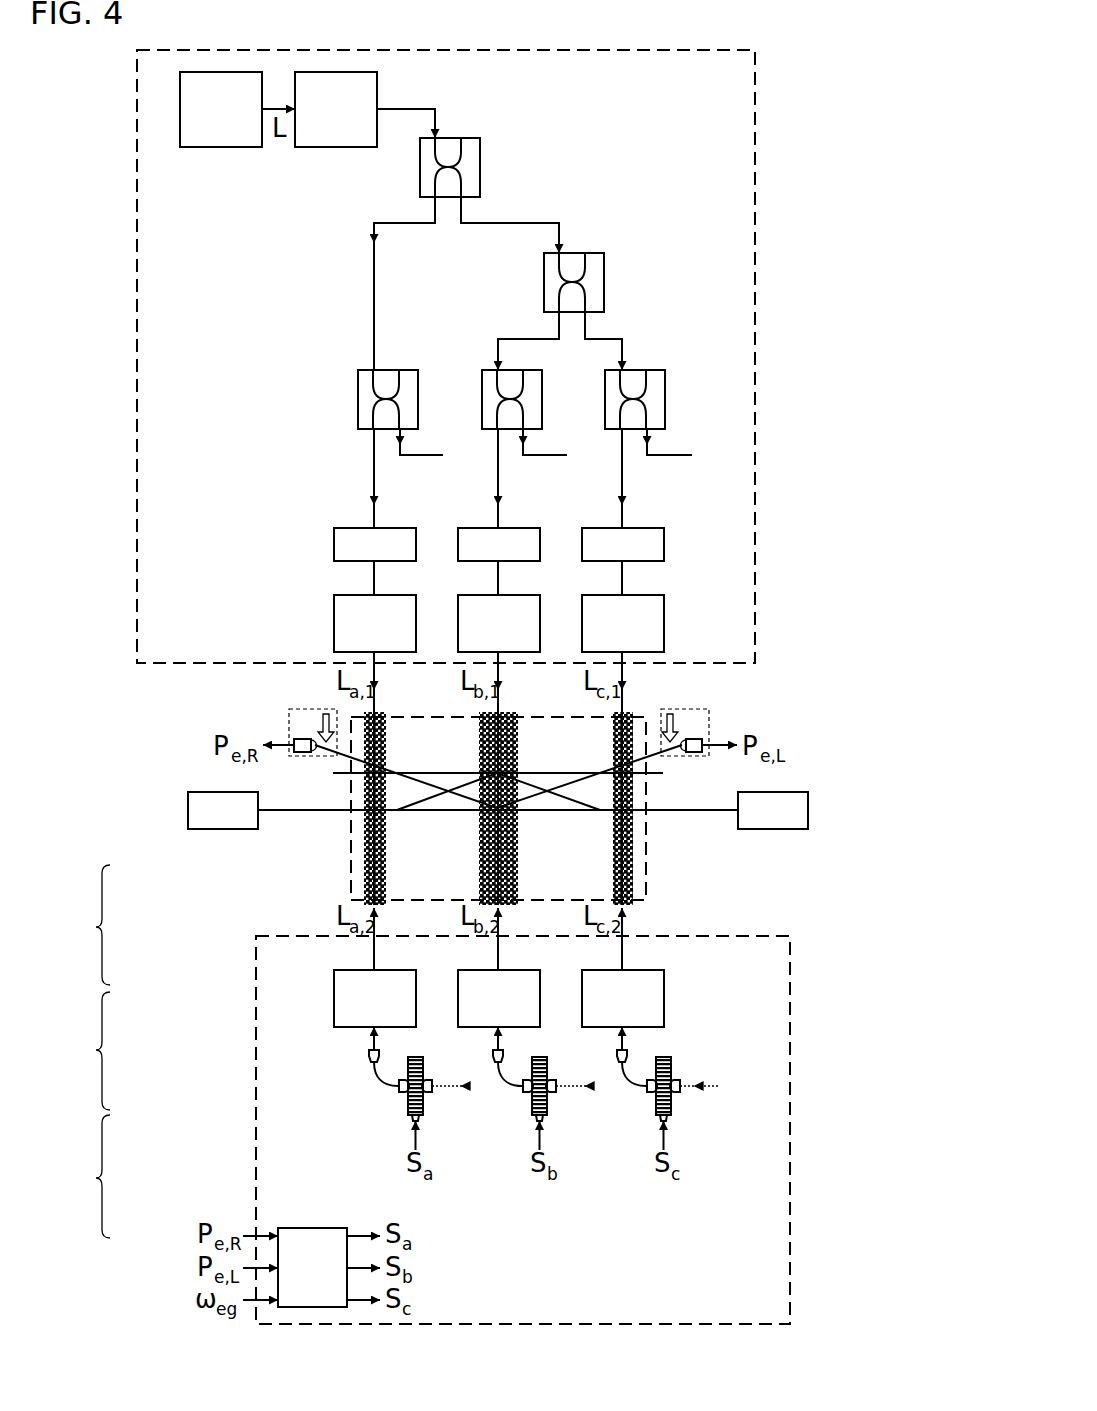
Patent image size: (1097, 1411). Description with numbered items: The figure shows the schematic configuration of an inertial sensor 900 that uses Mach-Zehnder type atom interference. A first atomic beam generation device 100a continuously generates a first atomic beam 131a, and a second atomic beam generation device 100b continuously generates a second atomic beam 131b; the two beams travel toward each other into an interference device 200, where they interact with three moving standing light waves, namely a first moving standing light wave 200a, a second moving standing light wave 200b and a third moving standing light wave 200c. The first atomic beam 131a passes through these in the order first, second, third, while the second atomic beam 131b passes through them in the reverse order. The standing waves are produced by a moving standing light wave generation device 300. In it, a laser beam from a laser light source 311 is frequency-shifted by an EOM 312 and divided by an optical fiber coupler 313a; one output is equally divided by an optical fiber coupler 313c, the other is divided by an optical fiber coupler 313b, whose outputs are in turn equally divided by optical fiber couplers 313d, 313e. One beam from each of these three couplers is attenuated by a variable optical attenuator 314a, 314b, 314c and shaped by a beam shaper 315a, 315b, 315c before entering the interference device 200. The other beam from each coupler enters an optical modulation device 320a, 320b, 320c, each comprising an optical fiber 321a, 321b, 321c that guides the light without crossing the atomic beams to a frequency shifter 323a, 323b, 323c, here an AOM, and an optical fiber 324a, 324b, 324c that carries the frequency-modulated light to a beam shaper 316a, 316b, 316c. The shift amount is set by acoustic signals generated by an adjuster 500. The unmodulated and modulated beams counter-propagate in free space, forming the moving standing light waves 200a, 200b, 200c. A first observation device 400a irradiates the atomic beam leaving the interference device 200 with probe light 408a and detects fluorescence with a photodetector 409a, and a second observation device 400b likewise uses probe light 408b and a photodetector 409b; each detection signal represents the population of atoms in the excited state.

The inertial sensor 900 is at (821, 50).
The moving standing light wave generation device 300 is at (757, 322).
The laser light source 311 is at (218, 148).
The EOM 312 is at (332, 148).
The optical fiber coupler 313a is at (478, 138).
The optical fiber coupler 313b is at (602, 253).
The optical fiber coupler 313c is at (358, 370).
The optical fiber coupler 313d is at (482, 370).
The optical fiber coupler 313e is at (664, 370).
The variable optical attenuator 314a is at (335, 528).
The variable optical attenuator 314b is at (458, 562).
The variable optical attenuator 314c is at (664, 544).
The beam shaper 315a is at (335, 595).
The beam shaper 315b is at (540, 596).
The beam shaper 315c is at (664, 622).
The beam shaper 316a is at (334, 1000).
The beam shaper 316b is at (539, 972).
The beam shaper 316c is at (664, 1000).
The optical modulation device 320a is at (74, 925).
The optical modulation device 320b is at (74, 1051).
The optical modulation device 320c is at (74, 1176).
The optical fiber 321a is at (420, 457).
The optical fiber 321b is at (545, 457).
The optical fiber 321c is at (670, 457).
The frequency shifter 323a is at (424, 1064).
The frequency shifter 323b is at (548, 1064).
The frequency shifter 323c is at (672, 1064).
The optical fiber 324a is at (380, 1088).
The optical fiber 324b is at (504, 1088).
The optical fiber 324c is at (628, 1088).
The interference device 200 is at (650, 879).
The first moving standing light wave 200a is at (363, 874).
The second moving standing light wave 200b is at (479, 874).
The third moving standing light wave 200c is at (613, 874).
The first atomic beam generation device 100a is at (188, 810).
The second atomic beam generation device 100b is at (808, 810).
The first atomic beam 131a is at (302, 813).
The second atomic beam 131b is at (707, 813).
The first observation device 400a is at (708, 720).
The second observation device 400b is at (288, 720).
The probe light 408a is at (678, 740).
The probe light 408b is at (322, 740).
The photodetector 409a is at (697, 757).
The photodetector 409b is at (302, 757).
The adjuster 500 is at (313, 1228).